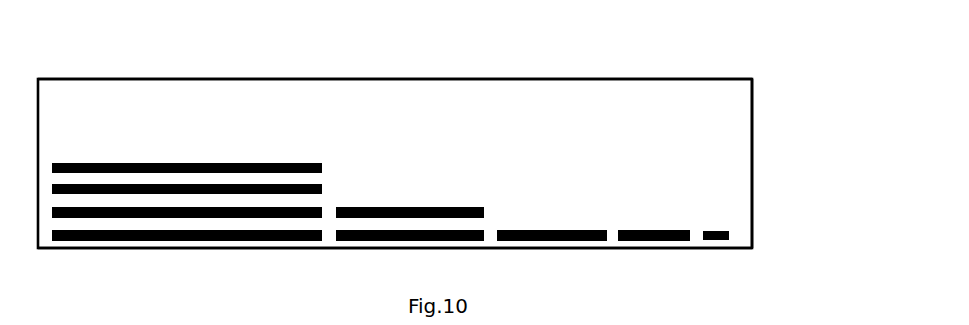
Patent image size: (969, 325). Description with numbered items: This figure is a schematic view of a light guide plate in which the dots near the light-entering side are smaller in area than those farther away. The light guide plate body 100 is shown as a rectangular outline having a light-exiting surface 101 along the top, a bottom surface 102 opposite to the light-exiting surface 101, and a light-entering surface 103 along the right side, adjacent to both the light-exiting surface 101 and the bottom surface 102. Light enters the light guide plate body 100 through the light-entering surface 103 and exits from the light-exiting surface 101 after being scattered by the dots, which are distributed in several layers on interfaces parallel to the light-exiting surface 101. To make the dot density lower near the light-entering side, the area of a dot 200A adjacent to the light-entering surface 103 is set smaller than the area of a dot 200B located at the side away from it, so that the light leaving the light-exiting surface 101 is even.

The light guide plate body 100 is at (722, 103).
The light-exiting surface 101 is at (420, 79).
The bottom surface 102 is at (558, 248).
The light-entering surface 103 is at (752, 150).
The dot 200A is at (713, 230).
The dot 200B is at (383, 208).